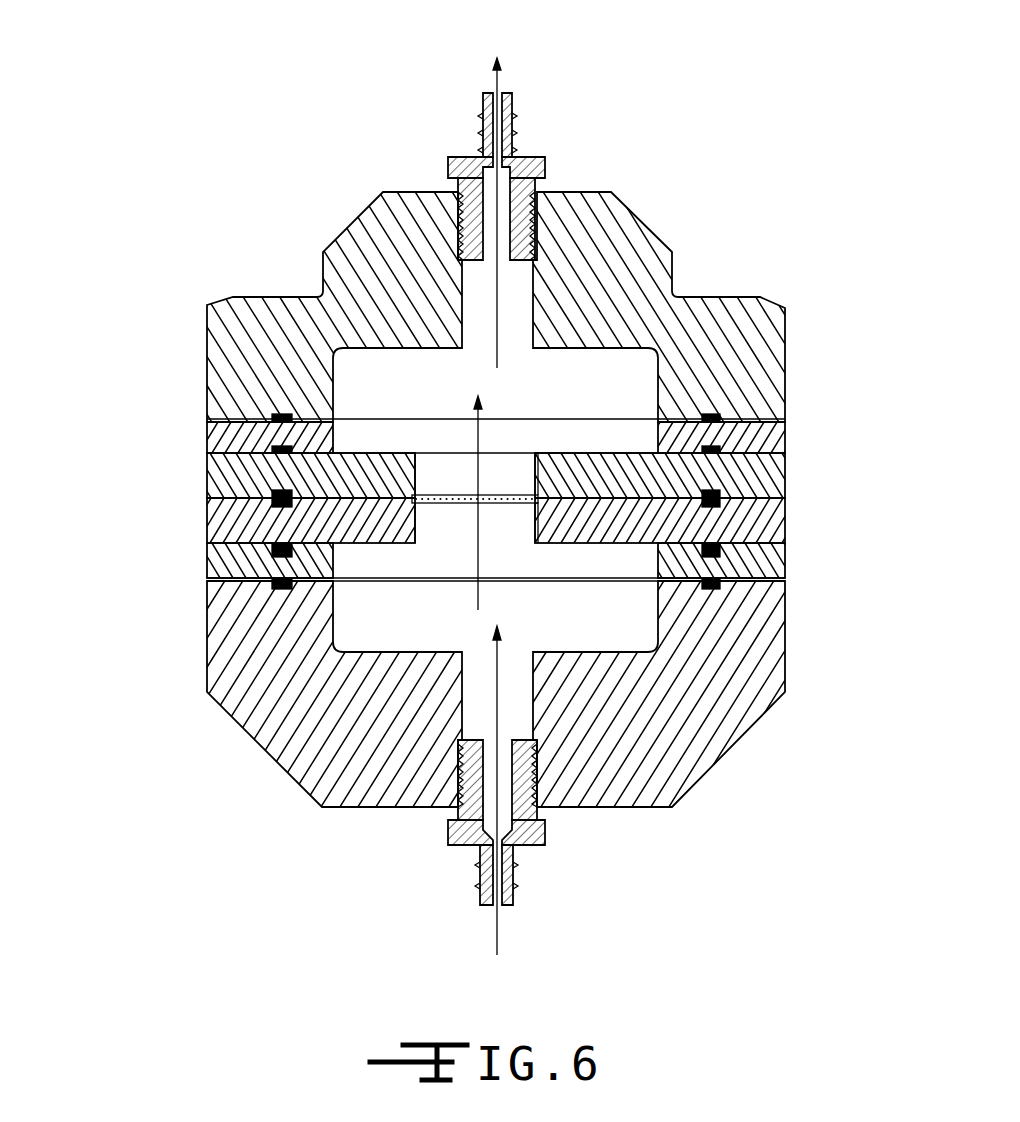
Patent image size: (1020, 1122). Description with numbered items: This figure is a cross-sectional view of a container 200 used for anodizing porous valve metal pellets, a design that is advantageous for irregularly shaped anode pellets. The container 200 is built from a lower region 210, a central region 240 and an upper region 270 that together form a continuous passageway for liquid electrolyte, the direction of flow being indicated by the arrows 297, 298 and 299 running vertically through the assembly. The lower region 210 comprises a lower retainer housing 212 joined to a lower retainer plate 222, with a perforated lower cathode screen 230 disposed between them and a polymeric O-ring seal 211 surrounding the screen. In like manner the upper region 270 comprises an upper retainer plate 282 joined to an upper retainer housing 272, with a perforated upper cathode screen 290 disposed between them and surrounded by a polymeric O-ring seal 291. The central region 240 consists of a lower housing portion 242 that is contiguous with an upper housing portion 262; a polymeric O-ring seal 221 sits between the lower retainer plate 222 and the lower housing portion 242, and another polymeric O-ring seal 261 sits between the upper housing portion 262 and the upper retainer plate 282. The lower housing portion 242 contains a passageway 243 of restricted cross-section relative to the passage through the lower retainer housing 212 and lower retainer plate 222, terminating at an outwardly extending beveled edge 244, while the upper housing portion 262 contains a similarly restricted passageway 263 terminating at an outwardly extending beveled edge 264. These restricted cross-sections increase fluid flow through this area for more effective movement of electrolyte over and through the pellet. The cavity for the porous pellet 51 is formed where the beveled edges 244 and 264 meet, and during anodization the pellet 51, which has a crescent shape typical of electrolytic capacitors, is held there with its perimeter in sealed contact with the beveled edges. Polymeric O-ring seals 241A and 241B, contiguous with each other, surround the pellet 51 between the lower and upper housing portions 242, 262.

The container 200 is at (768, 112).
The upper region 270 is at (174, 418).
The upper retainer housing 272 is at (785, 330).
The upper retainer plate 282 is at (785, 438).
The upper cathode screen 290 is at (617, 420).
The polymeric O-ring seal 291 is at (722, 418).
The polymeric O-ring seal 261 is at (722, 455).
The arrow 299 is at (500, 78).
The central region 240 is at (170, 496).
The upper housing portion 262 is at (785, 475).
The lower housing portion 242 is at (785, 518).
The passageway 263 is at (527, 484).
The passageway 243 is at (525, 537).
The porous pellet 51 is at (467, 496).
The beveled edge 264 is at (539, 496).
The beveled edge 244 is at (538, 504).
The polymeric O-ring seal 241A is at (722, 492).
The polymeric O-ring seal 241B is at (718, 510).
The arrow 298 is at (477, 597).
The lower region 210 is at (172, 584).
The lower retainer plate 222 is at (785, 562).
The lower retainer housing 212 is at (747, 740).
The lower cathode screen 230 is at (618, 583).
The polymeric O-ring seal 221 is at (722, 556).
The polymeric O-ring seal 211 is at (712, 590).
The arrow 297 is at (495, 933).